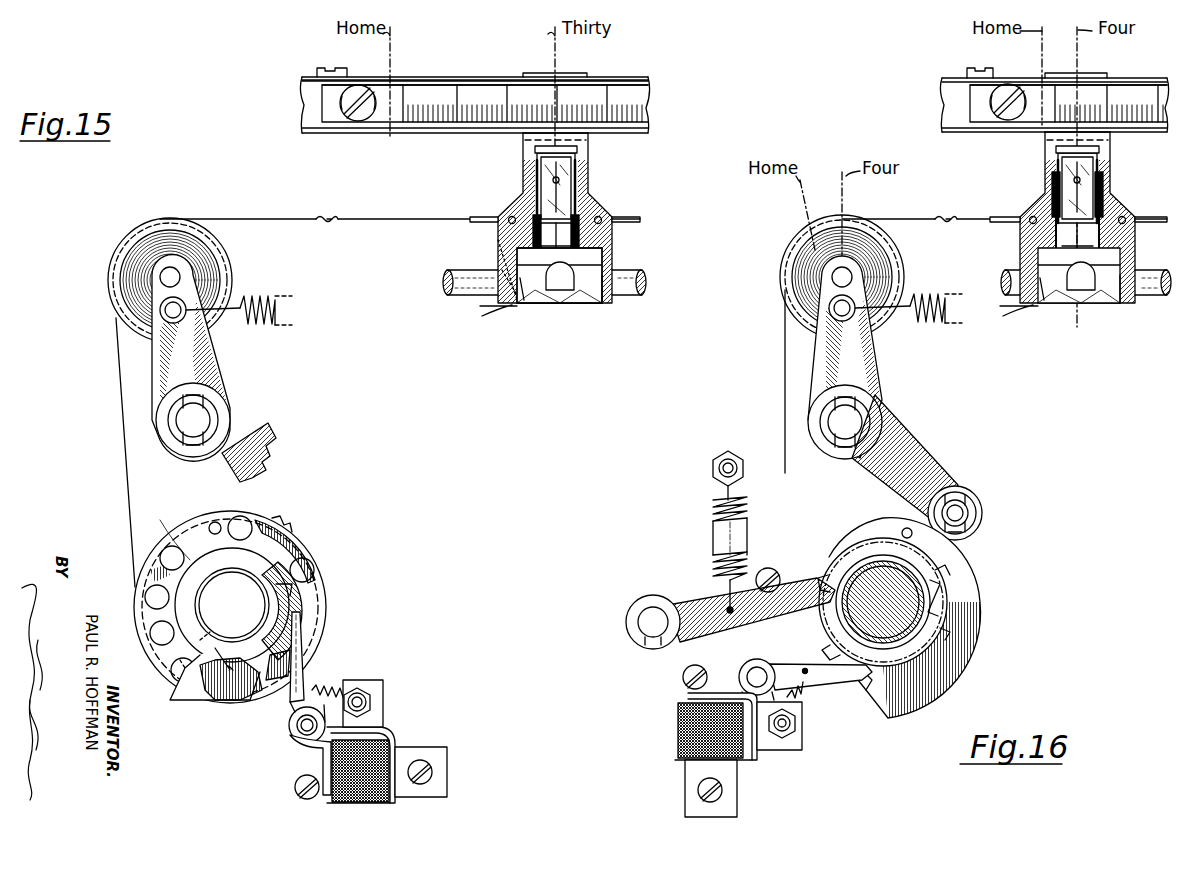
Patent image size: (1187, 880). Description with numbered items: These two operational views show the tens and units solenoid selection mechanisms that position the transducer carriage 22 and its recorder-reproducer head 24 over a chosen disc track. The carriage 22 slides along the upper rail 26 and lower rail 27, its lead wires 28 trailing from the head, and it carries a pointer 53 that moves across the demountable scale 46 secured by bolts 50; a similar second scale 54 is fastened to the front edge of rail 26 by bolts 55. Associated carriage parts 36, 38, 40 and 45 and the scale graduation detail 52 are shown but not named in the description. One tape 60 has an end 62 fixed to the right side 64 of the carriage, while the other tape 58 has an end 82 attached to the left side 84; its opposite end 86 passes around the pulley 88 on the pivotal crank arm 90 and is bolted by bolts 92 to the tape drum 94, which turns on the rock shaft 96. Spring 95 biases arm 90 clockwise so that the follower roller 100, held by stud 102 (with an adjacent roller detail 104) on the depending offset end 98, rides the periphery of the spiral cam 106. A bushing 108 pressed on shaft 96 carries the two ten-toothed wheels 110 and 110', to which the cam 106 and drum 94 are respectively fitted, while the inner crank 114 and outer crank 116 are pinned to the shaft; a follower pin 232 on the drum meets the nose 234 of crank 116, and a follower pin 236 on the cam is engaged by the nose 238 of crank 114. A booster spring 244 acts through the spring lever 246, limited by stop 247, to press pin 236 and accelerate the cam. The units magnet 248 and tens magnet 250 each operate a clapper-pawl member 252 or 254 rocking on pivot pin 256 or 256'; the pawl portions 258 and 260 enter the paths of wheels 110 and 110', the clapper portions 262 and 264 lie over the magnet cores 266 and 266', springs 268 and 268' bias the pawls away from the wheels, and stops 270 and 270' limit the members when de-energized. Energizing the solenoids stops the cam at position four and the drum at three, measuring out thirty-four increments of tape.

In FIG. 15, the transducer carriage 22 is at (594, 198).
In FIG. 16, the transducer carriage 22 is at (1116, 198).
In FIG. 15, the electromagnetic recorder-reproducer head 24 is at (572, 172).
In FIG. 16, the electromagnetic recorder-reproducer head 24 is at (1096, 174).
In FIG. 15, the upper guide rail 26 is at (302, 110).
In FIG. 16, the upper guide rail 26 is at (942, 97).
In FIG. 15, the lower guide rail 27 is at (447, 284).
In FIG. 15, the electrical input-output lead wires 28 is at (512, 306).
In FIG. 16, the electrical input-output lead wires 28 is at (1090, 288).
In FIG. 15, the contact bars 36 is at (531, 236).
In FIG. 16, the contact bars 36 is at (1050, 240).
In FIG. 15, the cross member 38 is at (536, 246).
In FIG. 16, the cross member 38 is at (1054, 256).
In FIG. 15, the window frame 40 is at (538, 169).
In FIG. 16, the window frame 40 is at (1058, 170).
In FIG. 15, the cap 45 is at (533, 151).
In FIG. 16, the cap 45 is at (1054, 151).
In FIG. 15, the demountable scale member 46 is at (467, 70).
In FIG. 16, the demountable scale member 46 is at (1154, 72).
In FIG. 15, the bolts 50 is at (318, 72).
In FIG. 16, the bolts 50 is at (968, 73).
In FIG. 15, the graduations 52 is at (418, 80).
In FIG. 15, the pointer member 53 is at (530, 74).
In FIG. 16, the pointer member 53 is at (1106, 75).
In FIG. 15, the second scale 54 is at (633, 90).
In FIG. 16, the second scale 54 is at (975, 113).
In FIG. 15, the bolts 55 is at (358, 114).
In FIG. 16, the bolts 55 is at (1000, 112).
In FIG. 15, the flexible tape 58 is at (114, 389).
In FIG. 16, the flexible tape 58 is at (780, 382).
In FIG. 15, the flexible tape 60 is at (651, 216).
In FIG. 16, the flexible tape 60 is at (1170, 229).
In FIG. 15, the tape end 62 is at (483, 215).
In FIG. 16, the tape end 62 is at (992, 221).
In FIG. 15, the right side of carriage 64 is at (620, 302).
In FIG. 16, the right side of carriage 64 is at (1138, 292).
In FIG. 15, the tape end 82 is at (448, 215).
In FIG. 16, the tape end 82 is at (976, 216).
In FIG. 15, the left side of carriage 84 is at (522, 300).
In FIG. 16, the left side of carriage 84 is at (1042, 300).
In FIG. 15, the tape end 86 is at (133, 558).
In FIG. 15, the pulley 88 is at (135, 236).
In FIG. 16, the pulley 88 is at (781, 262).
In FIG. 15, the pivotal crank arm 90 is at (233, 364).
In FIG. 16, the pivotal crank arm 90 is at (885, 375).
In FIG. 15, the bolts 92 is at (286, 531).
In FIG. 15, the tape drum 94 is at (305, 549).
In FIG. 15, the spring 95 is at (256, 298).
In FIG. 16, the spring 95 is at (920, 312).
In FIG. 15, the rock shaft 96 is at (225, 582).
In FIG. 16, the rock shaft 96 is at (860, 575).
In FIG. 15, the depending offset end 98 is at (258, 430).
In FIG. 16, the depending offset end 98 is at (913, 442).
In FIG. 16, the follower roller 100 is at (962, 490).
In FIG. 16, the short stud 102 is at (960, 515).
In FIG. 16, the roller bearing 104 is at (978, 522).
In FIG. 16, the spiral cam 106 is at (979, 567).
In FIG. 15, the bushing 108 is at (282, 604).
In FIG. 16, the bushing 108 is at (932, 640).
In FIG. 16, the toothed ratchet wheel 110 is at (983, 608).
In FIG. 15, the toothed ratchet wheel 110' is at (328, 580).
In FIG. 16, the inner drive crank 114 is at (960, 600).
In FIG. 15, the outer drive crank 116 is at (192, 678).
In FIG. 15, the follower pin 232 is at (217, 522).
In FIG. 15, the nose of reset crank 234 is at (213, 692).
In FIG. 16, the follower pin 236 is at (900, 530).
In FIG. 16, the cam step 238 is at (867, 692).
In FIG. 16, the booster spring 244 is at (716, 520).
In FIG. 16, the spring lever 246 is at (690, 616).
In FIG. 16, the stop member 247 is at (770, 568).
In FIG. 16, the units magnet 248 is at (673, 752).
In FIG. 15, the tens magnet 250 is at (390, 802).
In FIG. 16, the clapper-pawl member 252 is at (829, 676).
In FIG. 15, the clapper-pawl member 254 is at (311, 650).
In FIG. 16, the pivot pin 256 is at (739, 668).
In FIG. 15, the pivot pin 256' is at (283, 722).
In FIG. 16, the pawl portion 258 is at (803, 667).
In FIG. 15, the pawl portion 260 is at (300, 619).
In FIG. 16, the clapper portion 262 is at (686, 697).
In FIG. 15, the clapper portion 264 is at (322, 776).
In FIG. 16, the magnet core 266 is at (684, 730).
In FIG. 15, the magnet core 266' is at (320, 782).
In FIG. 16, the spring member 268 is at (804, 724).
In FIG. 15, the spring member 268' is at (367, 675).
In FIG. 16, the stop member 270 is at (669, 676).
In FIG. 15, the stop member 270' is at (276, 787).